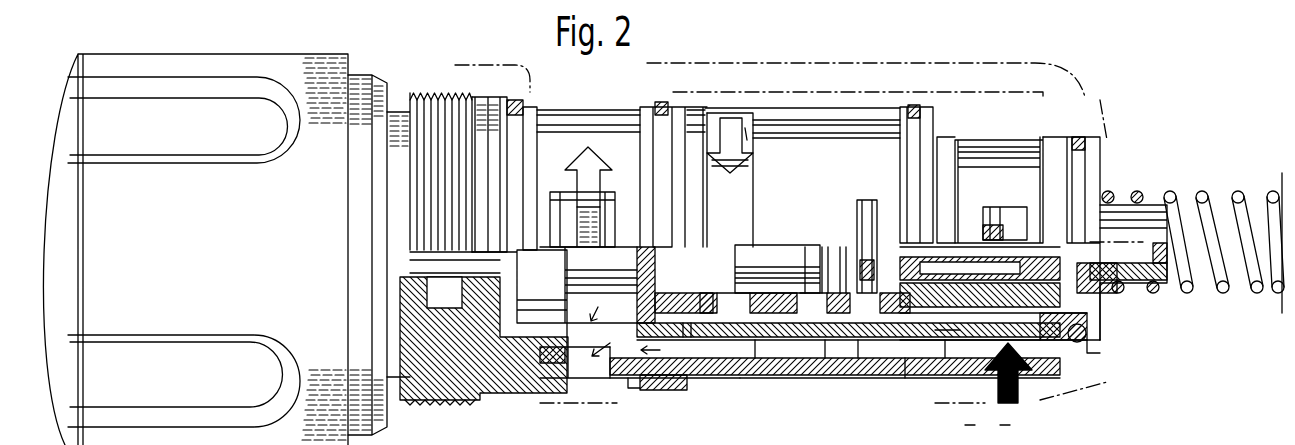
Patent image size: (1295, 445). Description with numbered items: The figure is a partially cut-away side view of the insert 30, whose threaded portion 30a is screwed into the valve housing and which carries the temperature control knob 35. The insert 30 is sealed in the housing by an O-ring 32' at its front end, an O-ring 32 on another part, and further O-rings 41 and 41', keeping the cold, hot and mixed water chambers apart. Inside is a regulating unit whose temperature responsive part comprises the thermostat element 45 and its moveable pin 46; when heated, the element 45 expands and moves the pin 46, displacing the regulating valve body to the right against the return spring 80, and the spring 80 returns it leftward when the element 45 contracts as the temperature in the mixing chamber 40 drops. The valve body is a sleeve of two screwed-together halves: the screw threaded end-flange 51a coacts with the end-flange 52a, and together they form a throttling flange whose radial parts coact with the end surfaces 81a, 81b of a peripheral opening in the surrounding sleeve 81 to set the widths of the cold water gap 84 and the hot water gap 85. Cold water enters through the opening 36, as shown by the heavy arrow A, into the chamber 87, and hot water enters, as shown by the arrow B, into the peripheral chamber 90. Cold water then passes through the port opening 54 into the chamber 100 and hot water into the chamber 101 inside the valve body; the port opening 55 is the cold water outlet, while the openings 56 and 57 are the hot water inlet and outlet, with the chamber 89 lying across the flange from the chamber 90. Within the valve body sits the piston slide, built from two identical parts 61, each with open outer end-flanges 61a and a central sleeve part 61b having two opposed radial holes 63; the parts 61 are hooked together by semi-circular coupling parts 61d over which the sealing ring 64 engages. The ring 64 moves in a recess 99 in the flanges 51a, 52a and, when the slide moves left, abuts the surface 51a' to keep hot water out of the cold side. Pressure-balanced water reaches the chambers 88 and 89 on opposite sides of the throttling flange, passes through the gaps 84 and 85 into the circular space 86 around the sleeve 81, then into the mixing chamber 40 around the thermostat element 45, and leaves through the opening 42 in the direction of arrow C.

The insert 30 is at (820, 63).
The threaded portion 30a is at (412, 90).
The O-ring 32 is at (920, 136).
The O-ring 32' is at (1087, 210).
The temperature control knob 35 is at (170, 84).
The opening 36 is at (755, 113).
The mixing chamber 40 is at (618, 317).
The O-ring 41 is at (663, 148).
The O-ring 41' is at (501, 137).
The opening 42 is at (612, 192).
The thermostat element 45 is at (455, 400).
The pin 46 is at (413, 270).
The screw threaded end-flange 51a is at (844, 252).
The surface 51a' is at (866, 223).
The end-flange 52a is at (937, 240).
The port opening 54 is at (687, 327).
The port opening 55 is at (825, 358).
The inlet opening 56 is at (1043, 313).
The outlet opening 57 is at (943, 330).
The part of piston slide 61 is at (1005, 425).
The end-flange 61a is at (723, 247).
The central sleeve part 61b is at (805, 218).
The semi-circular coupling part 61d is at (965, 425).
The radial holes 63 is at (965, 267).
The sealing ring 64 is at (875, 293).
The return spring 80 is at (1210, 152).
The sleeve 81 is at (785, 376).
The end surface 81a is at (828, 375).
The end surface 81b is at (860, 362).
The gap 84 is at (822, 295).
The gap 85 is at (913, 377).
The space 86 is at (695, 387).
The chamber 87 is at (640, 377).
The chamber 88 is at (760, 358).
The peripheral chamber 89 is at (950, 347).
The peripheral chamber 90 is at (1103, 353).
The recess 99 is at (918, 240).
The chamber 100 is at (810, 245).
The chamber 101 is at (1100, 318).
The arrow A is at (745, 128).
The arrow B is at (995, 387).
The arrow C is at (577, 187).